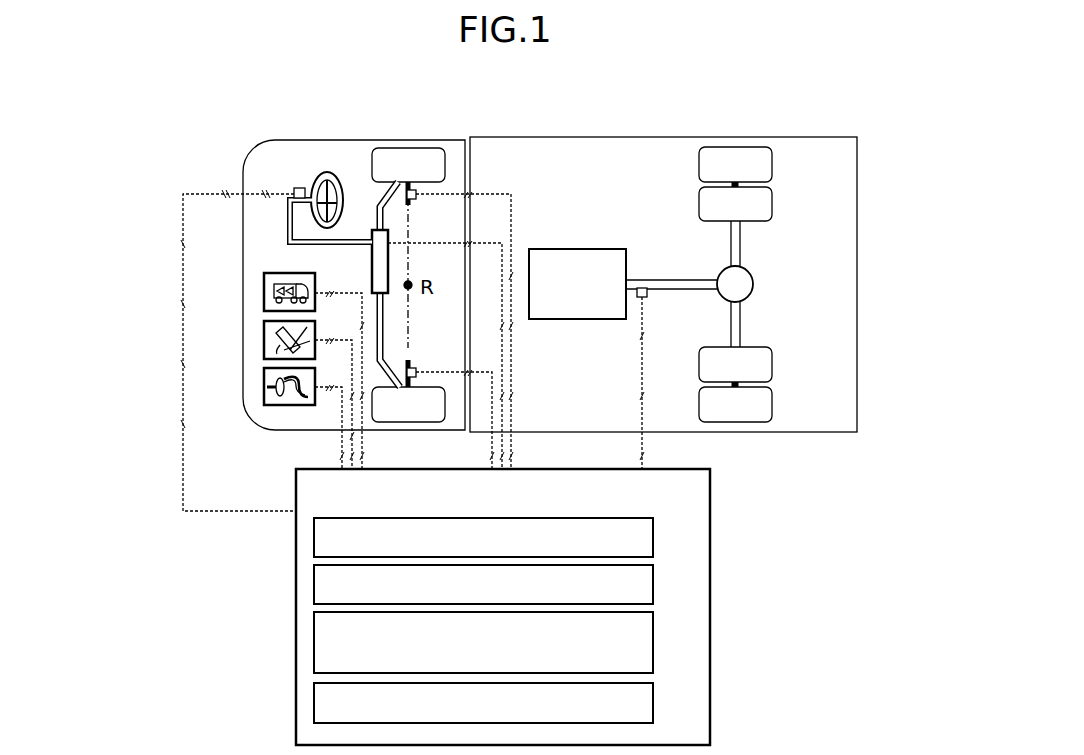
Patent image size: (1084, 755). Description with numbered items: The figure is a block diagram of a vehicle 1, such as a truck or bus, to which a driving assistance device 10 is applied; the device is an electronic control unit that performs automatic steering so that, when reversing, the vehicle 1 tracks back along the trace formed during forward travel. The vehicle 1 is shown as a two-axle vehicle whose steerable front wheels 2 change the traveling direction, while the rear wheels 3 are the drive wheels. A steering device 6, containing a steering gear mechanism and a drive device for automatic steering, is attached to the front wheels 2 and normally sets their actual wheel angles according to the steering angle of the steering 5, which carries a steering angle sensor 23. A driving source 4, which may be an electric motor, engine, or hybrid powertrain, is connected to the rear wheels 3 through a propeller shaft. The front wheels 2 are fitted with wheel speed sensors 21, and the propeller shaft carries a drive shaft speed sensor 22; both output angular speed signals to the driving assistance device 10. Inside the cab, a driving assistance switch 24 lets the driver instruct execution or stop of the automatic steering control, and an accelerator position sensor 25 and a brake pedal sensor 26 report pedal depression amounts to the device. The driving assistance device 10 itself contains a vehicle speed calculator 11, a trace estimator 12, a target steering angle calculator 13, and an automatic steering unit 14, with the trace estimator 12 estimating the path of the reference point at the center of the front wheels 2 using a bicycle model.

The vehicle 1 is at (230, 125).
The front wheels 2 is at (408, 148).
The rear wheels 3 is at (735, 147).
The driving source 4 is at (578, 249).
The steering 5 is at (340, 188).
The steering device 6 is at (372, 265).
The driving assistance device 10 is at (710, 496).
The vehicle speed calculator 11 is at (655, 540).
The trace estimator 12 is at (655, 587).
The target steering angle calculator 13 is at (655, 632).
The automatic steering unit 14 is at (655, 704).
The wheel speed sensors 21 is at (420, 200).
The drive shaft speed sensor 22 is at (650, 297).
The steering angle sensor 23 is at (299, 188).
The driving assistance switch 24 is at (264, 293).
The accelerator position sensor 25 is at (264, 340).
The brake pedal sensor 26 is at (264, 387).